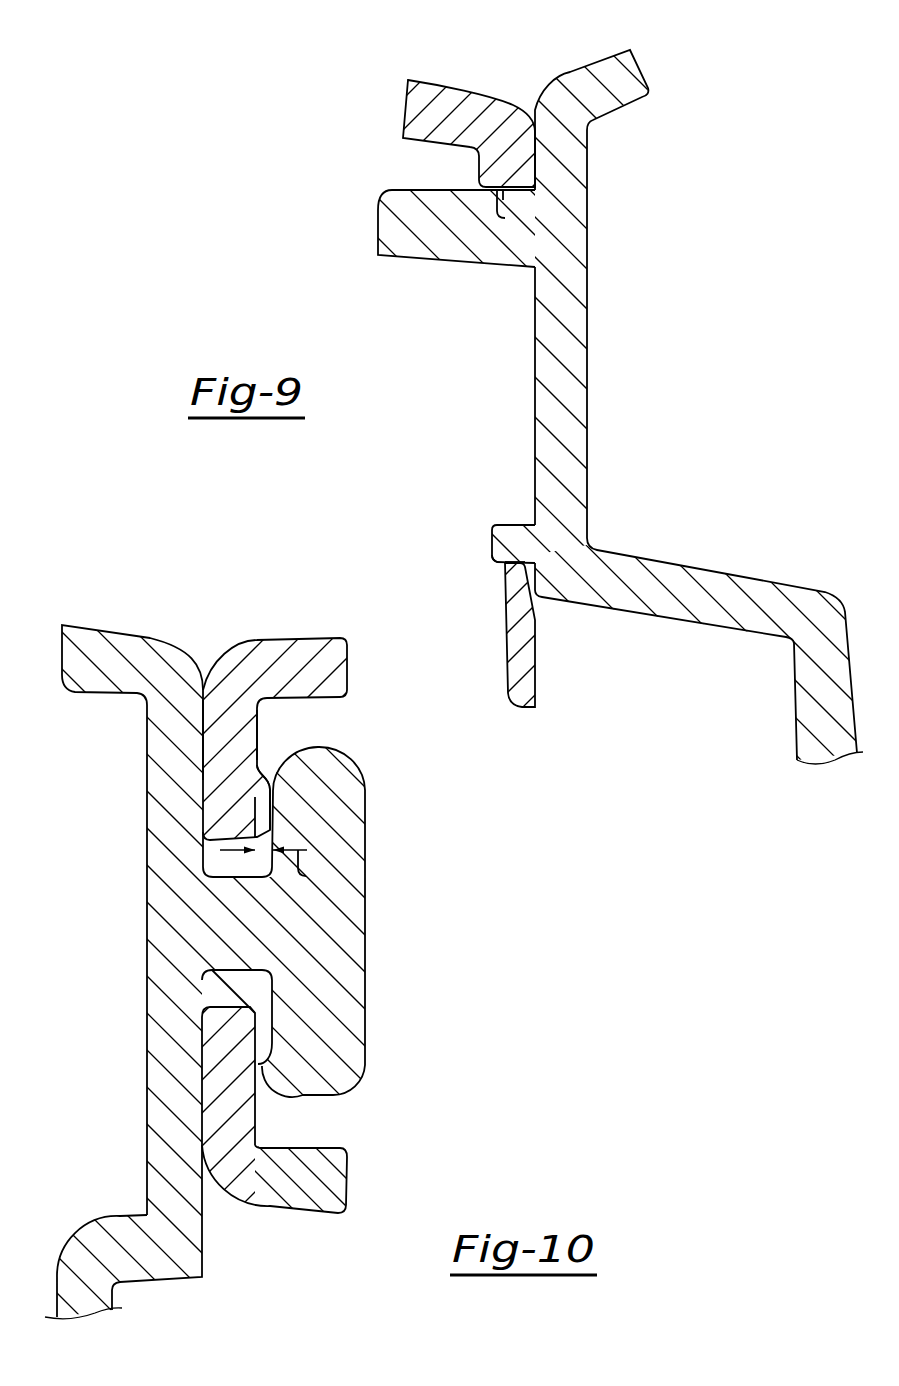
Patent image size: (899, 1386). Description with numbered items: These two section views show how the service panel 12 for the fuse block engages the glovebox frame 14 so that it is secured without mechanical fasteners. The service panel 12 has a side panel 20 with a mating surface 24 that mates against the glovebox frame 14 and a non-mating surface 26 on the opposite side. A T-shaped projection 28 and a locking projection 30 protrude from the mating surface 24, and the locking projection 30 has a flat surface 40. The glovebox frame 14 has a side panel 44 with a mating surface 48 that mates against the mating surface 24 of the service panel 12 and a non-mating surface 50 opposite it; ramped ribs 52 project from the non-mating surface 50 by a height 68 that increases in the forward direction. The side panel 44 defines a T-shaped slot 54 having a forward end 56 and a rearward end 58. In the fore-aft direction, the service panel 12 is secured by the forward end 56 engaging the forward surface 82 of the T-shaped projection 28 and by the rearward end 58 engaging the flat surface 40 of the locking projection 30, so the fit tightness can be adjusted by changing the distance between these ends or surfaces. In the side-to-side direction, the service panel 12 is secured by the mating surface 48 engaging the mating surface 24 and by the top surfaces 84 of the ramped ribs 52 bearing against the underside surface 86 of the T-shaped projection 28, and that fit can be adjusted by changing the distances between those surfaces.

In FIG. 9, the service panel 12 is at (643, 45).
In FIG. 10, the service panel 12 is at (92, 614).
In FIG. 9, the glovebox frame 14 is at (404, 76).
In FIG. 10, the glovebox frame 14 is at (306, 624).
In FIG. 9, the side panel 20 is at (535, 355).
In FIG. 10, the side panel 20 is at (211, 1196).
In FIG. 10, the mating surface 24 is at (202, 1097).
In FIG. 10, the non-mating surface 26 is at (147, 1127).
In FIG. 9, the T-shaped projection 28 is at (378, 192).
In FIG. 10, the T-shaped projection 28 is at (367, 1089).
In FIG. 9, the locking projection 30 is at (487, 515).
In FIG. 9, the flat surface 40 is at (552, 597).
In FIG. 9, the side panel 44 is at (505, 620).
In FIG. 10, the side panel 44 is at (269, 1127).
In FIG. 10, the mating surface 48 is at (200, 738).
In FIG. 10, the non-mating surface 50 is at (257, 733).
In FIG. 10, the ramped rib 52 is at (267, 790).
In FIG. 9, the T-shaped slot 54 is at (518, 549).
In FIG. 10, the T-shaped slot 54 is at (230, 1007).
In FIG. 9, the forward end 56 is at (505, 218).
In FIG. 9, the rearward end 58 is at (495, 545).
In FIG. 10, the height 68 is at (307, 877).
In FIG. 9, the forward surface 82 is at (500, 196).
In FIG. 10, the top surface 84 is at (270, 810).
In FIG. 10, the underside surface 86 is at (267, 993).